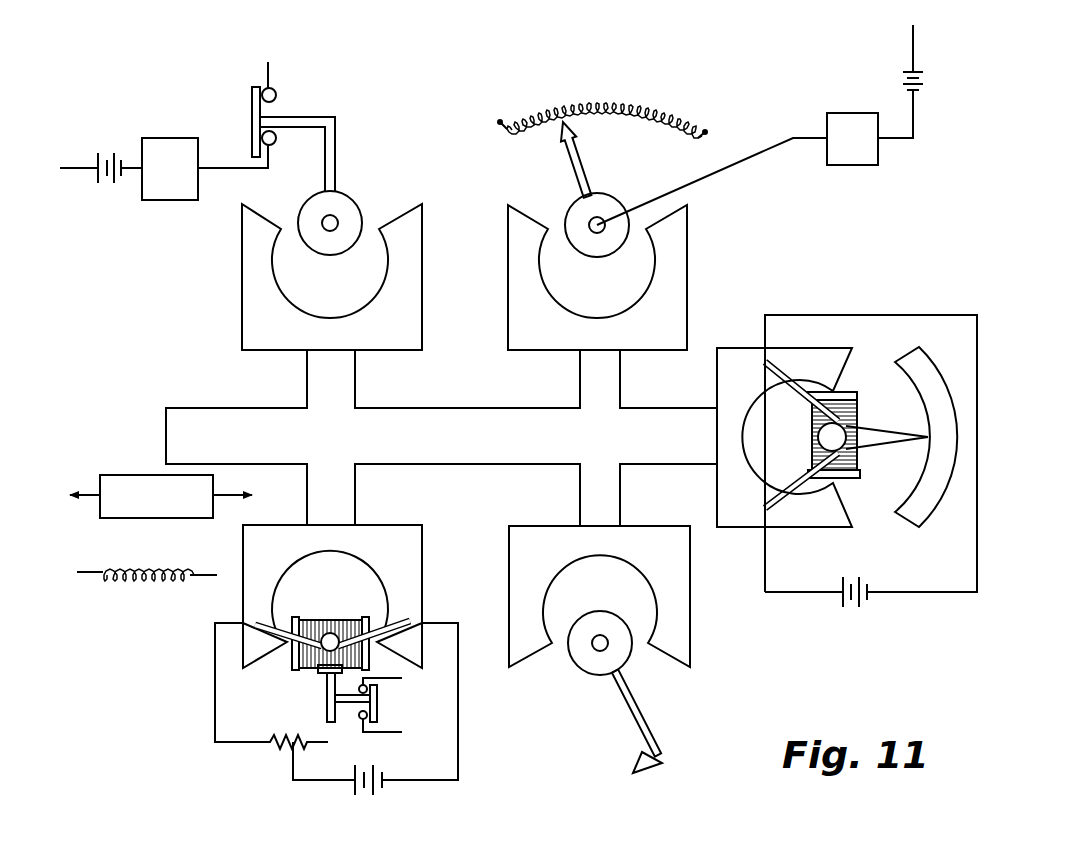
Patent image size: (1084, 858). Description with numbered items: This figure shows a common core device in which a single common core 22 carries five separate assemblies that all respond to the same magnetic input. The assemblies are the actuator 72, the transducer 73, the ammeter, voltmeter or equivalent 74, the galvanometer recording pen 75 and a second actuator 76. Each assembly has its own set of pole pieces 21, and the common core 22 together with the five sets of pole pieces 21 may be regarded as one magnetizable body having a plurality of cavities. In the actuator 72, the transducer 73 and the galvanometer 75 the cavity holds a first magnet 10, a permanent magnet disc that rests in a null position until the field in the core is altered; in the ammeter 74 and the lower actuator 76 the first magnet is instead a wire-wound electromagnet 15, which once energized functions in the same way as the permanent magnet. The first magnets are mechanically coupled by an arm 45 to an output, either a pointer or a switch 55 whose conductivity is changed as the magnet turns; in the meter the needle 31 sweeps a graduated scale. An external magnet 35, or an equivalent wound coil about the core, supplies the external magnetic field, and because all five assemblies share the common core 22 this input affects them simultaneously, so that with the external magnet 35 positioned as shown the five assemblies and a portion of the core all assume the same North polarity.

The first magnet 10 is at (355, 200).
The electromagnet 15 is at (292, 668).
The pole pieces 21 is at (242, 268).
The common core 22 is at (166, 418).
The needle 31 is at (881, 450).
The external magnet 35 is at (190, 518).
The arm 45 is at (568, 158).
The switch 55 is at (252, 120).
The actuator 72 is at (321, 277).
The transducer 73 is at (694, 249).
The ammeter, voltmeter or equivalent 74 is at (847, 468).
The galvanometer recording pen 75 is at (504, 580).
The actuator 76 is at (426, 600).